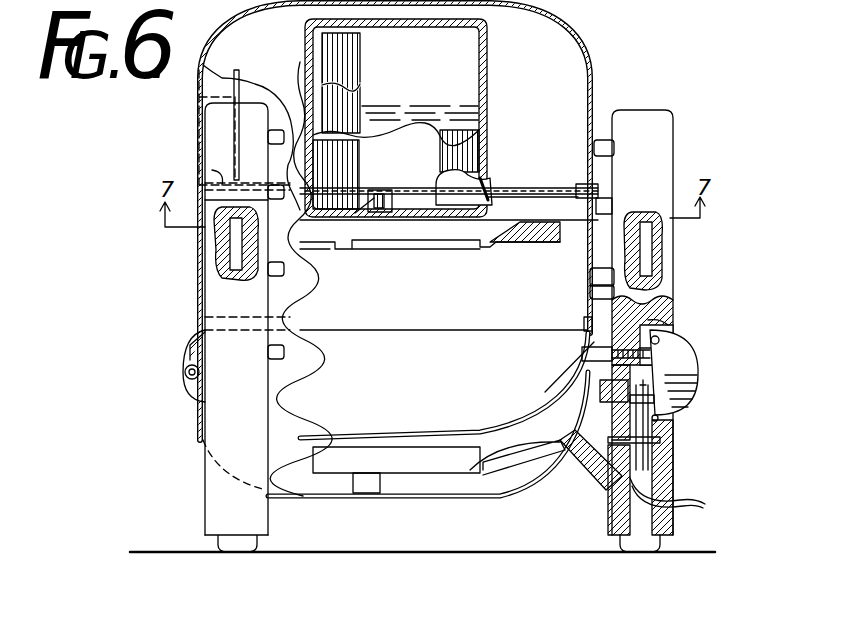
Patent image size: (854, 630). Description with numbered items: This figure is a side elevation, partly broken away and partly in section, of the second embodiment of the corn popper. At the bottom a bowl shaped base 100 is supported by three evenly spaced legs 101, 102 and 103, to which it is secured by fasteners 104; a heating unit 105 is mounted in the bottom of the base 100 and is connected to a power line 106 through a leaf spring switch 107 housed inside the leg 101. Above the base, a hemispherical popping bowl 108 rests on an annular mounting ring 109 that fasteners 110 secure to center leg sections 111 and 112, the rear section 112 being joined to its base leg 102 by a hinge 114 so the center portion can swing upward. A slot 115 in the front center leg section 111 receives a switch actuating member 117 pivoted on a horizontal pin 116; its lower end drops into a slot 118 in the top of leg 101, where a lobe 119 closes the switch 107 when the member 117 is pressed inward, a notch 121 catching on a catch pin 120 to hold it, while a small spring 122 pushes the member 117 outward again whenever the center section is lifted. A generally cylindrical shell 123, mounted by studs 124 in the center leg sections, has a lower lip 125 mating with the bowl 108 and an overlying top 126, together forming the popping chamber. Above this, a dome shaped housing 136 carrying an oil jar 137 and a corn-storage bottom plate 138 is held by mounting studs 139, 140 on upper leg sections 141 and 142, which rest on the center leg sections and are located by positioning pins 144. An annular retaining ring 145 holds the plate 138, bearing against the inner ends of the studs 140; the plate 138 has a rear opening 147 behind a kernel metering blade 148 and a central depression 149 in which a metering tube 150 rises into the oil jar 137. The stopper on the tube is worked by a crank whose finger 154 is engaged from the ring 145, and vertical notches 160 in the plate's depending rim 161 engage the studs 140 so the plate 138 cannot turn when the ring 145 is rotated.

The bowl shaped base 100 is at (532, 494).
The leg 101 is at (675, 472).
The leg 102 is at (203, 494).
The leg 103 is at (270, 513).
The fasteners 104 is at (588, 402).
The heating unit 105 is at (480, 466).
The power line 106 is at (692, 500).
The leaf spring switch 107 is at (662, 404).
The popping bowl 108 is at (492, 424).
The annular mounting ring 109 is at (582, 354).
The fasteners 110 is at (300, 350).
The center leg section 111 is at (675, 284).
The center leg section 112 is at (208, 286).
The hinges 114 is at (185, 390).
The slot 115 is at (670, 322).
The horizontal pin 116 is at (662, 338).
The switch actuating member 117 is at (698, 382).
The slot 118 is at (676, 442).
The lobe 119 is at (680, 394).
The catch pin 120 is at (662, 443).
The notch 121 is at (660, 418).
The spring 122 is at (652, 345).
The cylindrical shell 123 is at (592, 271).
The studs 124 is at (284, 270).
The lower lip 125 is at (584, 323).
The top 126 is at (450, 248).
The dome shaped housing 136 is at (598, 88).
The oil jar 137 is at (487, 94).
The bottom plate 138 is at (490, 200).
The mounting studs 139 is at (290, 112).
The mounting studs 140 is at (592, 188).
The upper leg section 141 is at (675, 154).
The upper leg section 142 is at (204, 148).
The positioning pins 144 is at (224, 245).
The annular retaining ring 145 is at (555, 200).
The opening 147 is at (205, 170).
The kernel metering blade 148 is at (200, 100).
The central depression 149 is at (497, 238).
The metering tube 150 is at (360, 95).
The finger 154 is at (386, 204).
The vertical notches 160 is at (586, 200).
The depending rim 161 is at (610, 210).